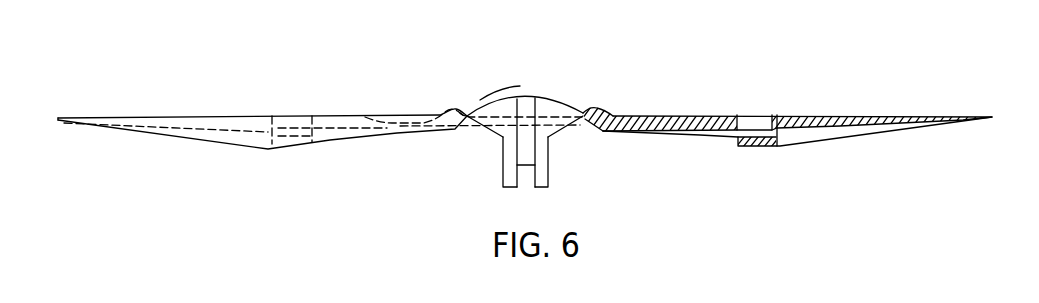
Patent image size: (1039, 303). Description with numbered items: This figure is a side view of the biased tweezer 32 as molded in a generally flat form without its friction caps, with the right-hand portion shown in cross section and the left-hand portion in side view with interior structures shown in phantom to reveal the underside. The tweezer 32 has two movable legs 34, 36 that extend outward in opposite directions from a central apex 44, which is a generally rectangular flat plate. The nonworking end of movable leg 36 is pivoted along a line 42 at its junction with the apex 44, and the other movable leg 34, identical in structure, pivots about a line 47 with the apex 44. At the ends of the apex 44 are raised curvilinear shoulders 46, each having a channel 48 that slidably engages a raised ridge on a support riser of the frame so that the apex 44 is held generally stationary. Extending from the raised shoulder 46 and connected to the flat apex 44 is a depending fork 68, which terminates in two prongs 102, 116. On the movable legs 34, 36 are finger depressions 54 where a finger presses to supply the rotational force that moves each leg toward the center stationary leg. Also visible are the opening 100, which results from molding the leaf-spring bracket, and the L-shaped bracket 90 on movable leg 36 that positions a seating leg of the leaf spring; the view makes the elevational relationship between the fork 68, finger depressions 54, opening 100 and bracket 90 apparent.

The biased tweezer 32 is at (528, 66).
The movable leg 34 is at (162, 134).
The movable leg 36 is at (879, 116).
The pivot line 42 is at (586, 114).
The apex 44 is at (575, 123).
The raised curvilinear shoulder 46 is at (497, 107).
The pivot line 47 is at (467, 116).
The channel 48 is at (531, 100).
The finger depression 54 is at (647, 116).
The depending fork 68 is at (496, 133).
The L-shaped bracket 90 is at (777, 146).
The opening 100 is at (753, 122).
The prong 102 is at (503, 188).
The prong 116 is at (548, 186).